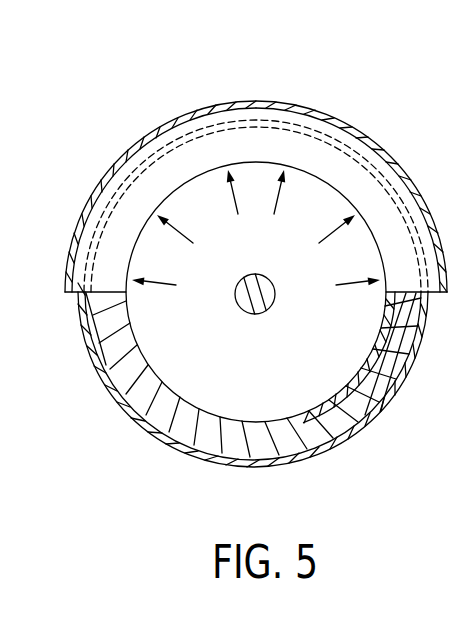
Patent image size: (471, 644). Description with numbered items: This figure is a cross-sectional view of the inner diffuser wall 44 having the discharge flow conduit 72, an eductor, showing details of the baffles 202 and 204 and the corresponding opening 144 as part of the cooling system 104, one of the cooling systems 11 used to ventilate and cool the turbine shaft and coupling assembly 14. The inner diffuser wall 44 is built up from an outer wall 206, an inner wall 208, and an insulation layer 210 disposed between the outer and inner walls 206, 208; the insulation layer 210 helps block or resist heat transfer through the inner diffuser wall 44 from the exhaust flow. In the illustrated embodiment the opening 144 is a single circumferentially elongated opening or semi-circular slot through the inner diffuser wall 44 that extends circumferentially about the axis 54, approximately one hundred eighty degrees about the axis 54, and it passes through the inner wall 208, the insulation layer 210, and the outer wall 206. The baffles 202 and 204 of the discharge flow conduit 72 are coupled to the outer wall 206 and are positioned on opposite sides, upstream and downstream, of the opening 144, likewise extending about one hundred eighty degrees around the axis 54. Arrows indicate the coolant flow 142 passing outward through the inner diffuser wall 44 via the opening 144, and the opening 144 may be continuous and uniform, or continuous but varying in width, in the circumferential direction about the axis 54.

The discharge flow conduit 72 is at (292, 60).
The baffle 204 is at (103, 177).
The baffle 202 is at (430, 222).
The opening 144 is at (313, 147).
The cooling system 104 is at (178, 491).
The cooling systems 11 is at (380, 491).
The turbine shaft and coupling assembly 14 is at (241, 332).
The coolant flow 142 is at (275, 203).
The axis 54 is at (235, 294).
The insulation layer 210 is at (272, 442).
The inner wall 208 is at (367, 362).
The inner diffuser wall 44 is at (279, 471).
The outer wall 206 is at (362, 430).